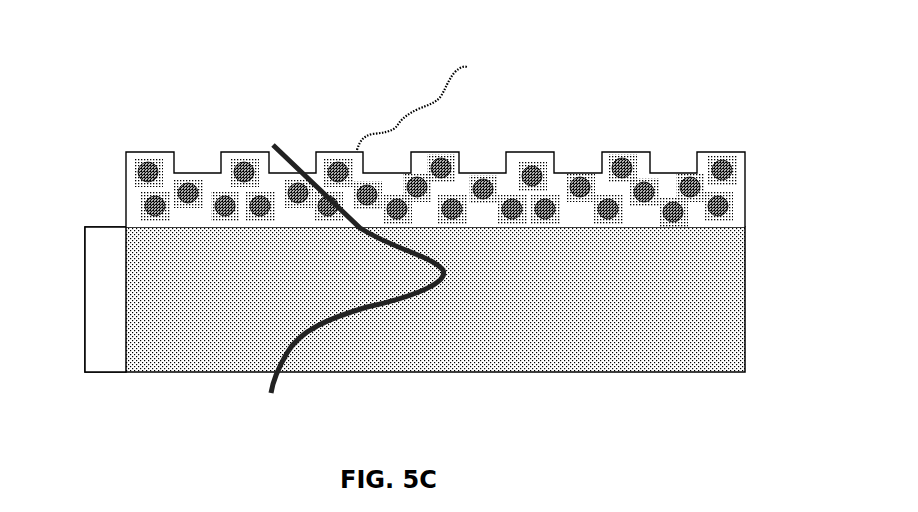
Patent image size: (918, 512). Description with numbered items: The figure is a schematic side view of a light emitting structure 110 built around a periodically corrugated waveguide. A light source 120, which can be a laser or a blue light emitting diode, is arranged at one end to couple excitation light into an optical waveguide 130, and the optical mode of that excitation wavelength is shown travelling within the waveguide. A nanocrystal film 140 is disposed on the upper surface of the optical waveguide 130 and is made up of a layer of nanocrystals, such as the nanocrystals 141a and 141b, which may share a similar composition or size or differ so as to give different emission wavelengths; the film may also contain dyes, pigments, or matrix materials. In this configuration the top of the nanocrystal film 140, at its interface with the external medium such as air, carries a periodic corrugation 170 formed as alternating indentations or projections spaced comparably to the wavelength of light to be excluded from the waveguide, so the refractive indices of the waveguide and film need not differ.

The light emitting structure 110 is at (178, 80).
The light source 120 is at (98, 292).
The optical waveguide 130 is at (210, 337).
The nanocrystal film 140 is at (702, 155).
The nanocrystal 141a is at (533, 168).
The nanocrystal 141b is at (633, 170).
The periodic corrugation 170 is at (207, 173).